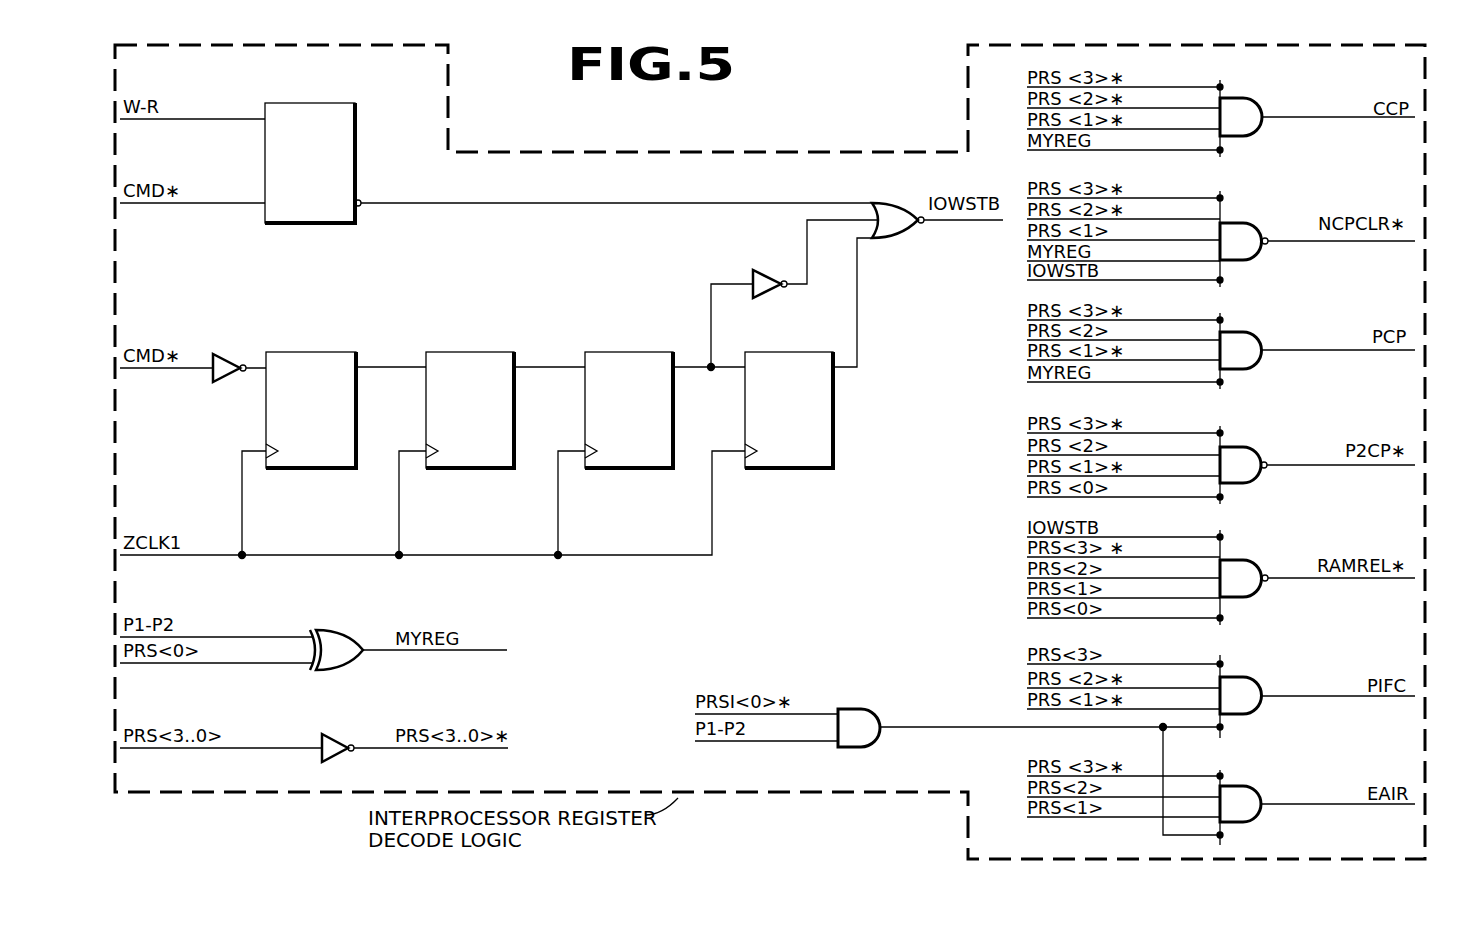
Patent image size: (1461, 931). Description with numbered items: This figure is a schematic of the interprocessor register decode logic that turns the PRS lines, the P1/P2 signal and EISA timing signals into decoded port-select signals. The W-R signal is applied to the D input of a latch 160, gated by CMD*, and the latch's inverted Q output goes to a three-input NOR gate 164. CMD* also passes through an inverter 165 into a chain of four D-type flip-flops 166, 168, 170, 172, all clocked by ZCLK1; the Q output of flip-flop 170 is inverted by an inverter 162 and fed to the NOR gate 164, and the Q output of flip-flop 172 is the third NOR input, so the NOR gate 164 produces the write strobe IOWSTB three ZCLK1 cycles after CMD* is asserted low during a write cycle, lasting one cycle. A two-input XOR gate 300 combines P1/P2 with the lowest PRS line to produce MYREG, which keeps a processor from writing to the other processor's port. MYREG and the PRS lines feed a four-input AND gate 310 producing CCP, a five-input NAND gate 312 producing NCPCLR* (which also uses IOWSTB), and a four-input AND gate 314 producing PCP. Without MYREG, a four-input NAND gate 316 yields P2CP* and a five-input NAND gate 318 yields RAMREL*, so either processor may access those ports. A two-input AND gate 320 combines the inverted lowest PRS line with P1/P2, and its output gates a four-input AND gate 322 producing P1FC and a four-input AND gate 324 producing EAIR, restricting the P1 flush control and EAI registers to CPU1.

The latch 160 is at (358, 152).
The inverter 162 is at (772, 270).
The three-input NOR gate 164 is at (893, 240).
The inverter 165 is at (228, 352).
The D-type flip-flop 166 is at (306, 350).
The D-type flip-flop 168 is at (466, 350).
The D-type flip-flop 170 is at (624, 350).
The D-type flip-flop 172 is at (838, 436).
The two-input XOR gate 300 is at (341, 632).
The four-input AND gate 310 is at (1244, 97).
The five-input NAND gate 312 is at (1242, 222).
The four-input AND gate 314 is at (1242, 330).
The four-input NAND gate 316 is at (1243, 445).
The five-input NAND gate 318 is at (1243, 558).
The two-input AND gate 320 is at (847, 749).
The four-input AND gate 322 is at (1243, 678).
The four-input AND gate 324 is at (1249, 788).